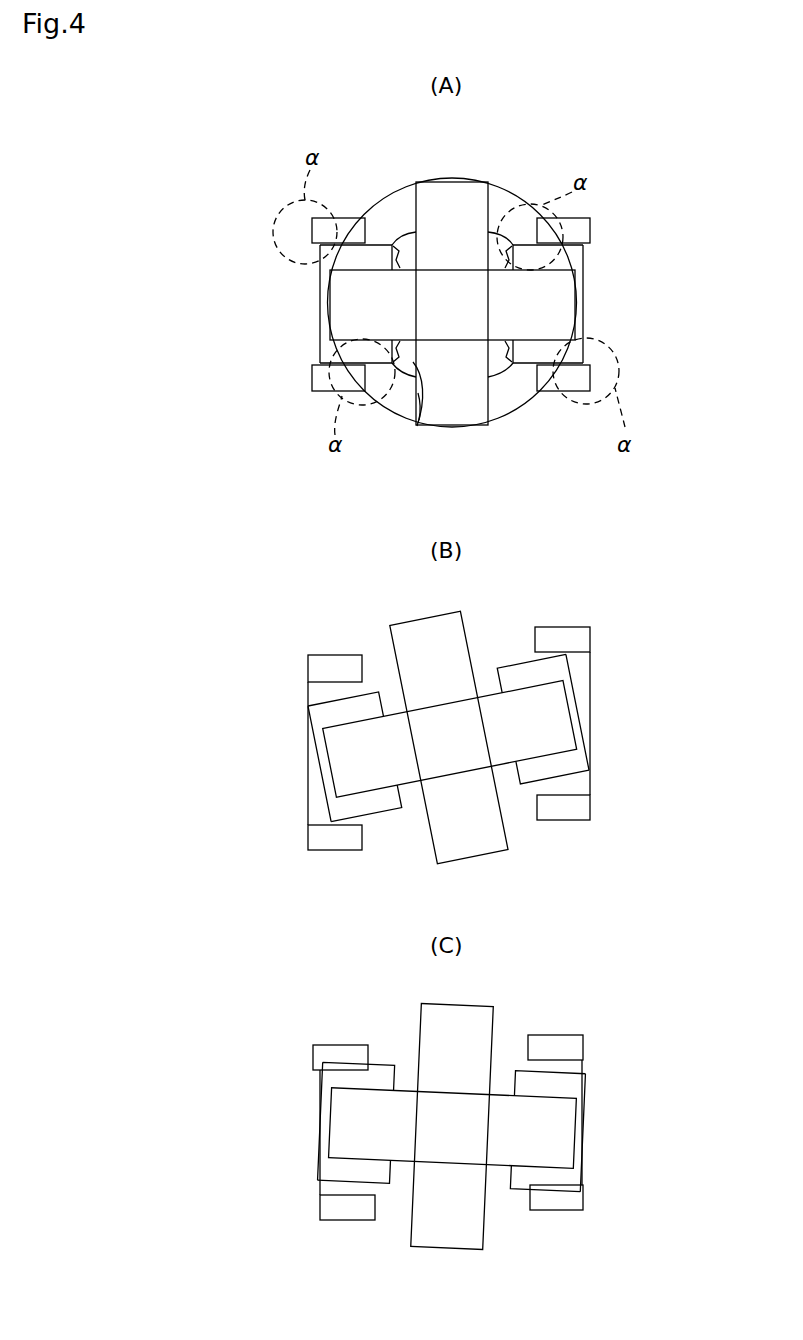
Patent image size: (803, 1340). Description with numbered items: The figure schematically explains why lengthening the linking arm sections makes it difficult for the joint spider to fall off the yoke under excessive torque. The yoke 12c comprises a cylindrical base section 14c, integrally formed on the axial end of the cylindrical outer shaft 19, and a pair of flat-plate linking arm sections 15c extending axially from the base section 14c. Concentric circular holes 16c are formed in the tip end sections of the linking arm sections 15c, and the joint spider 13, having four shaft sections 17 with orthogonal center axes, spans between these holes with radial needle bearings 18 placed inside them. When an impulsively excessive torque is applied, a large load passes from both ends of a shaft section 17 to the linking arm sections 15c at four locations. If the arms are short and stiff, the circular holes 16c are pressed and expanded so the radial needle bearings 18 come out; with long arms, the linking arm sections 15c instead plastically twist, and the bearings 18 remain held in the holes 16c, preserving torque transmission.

In FIG. 4A, the yoke 12c is at (512, 186).
In FIG. 4A, the joint spider 13 is at (431, 306).
In FIG. 4B, the joint spider 13 is at (453, 729).
In FIG. 4C, the joint spider 13 is at (452, 1132).
In FIG. 4A, the base section 14c is at (400, 400).
In FIG. 4A, the linking arm sections 15c is at (588, 231).
In FIG. 4B, the linking arm sections 15c is at (318, 665).
In FIG. 4C, the linking arm sections 15c is at (320, 1207).
In FIG. 4A, the circular holes 16c is at (322, 351).
In FIG. 4B, the circular holes 16c is at (312, 818).
In FIG. 4C, the circular holes 16c is at (320, 1075).
In FIG. 4A, the shaft sections 17 is at (460, 200).
In FIG. 4B, the shaft sections 17 is at (448, 632).
In FIG. 4C, the shaft sections 17 is at (420, 1027).
In FIG. 4A, the radial needle bearings 18 is at (586, 256).
In FIG. 4B, the radial needle bearings 18 is at (320, 713).
In FIG. 4C, the radial needle bearings 18 is at (340, 1185).
In FIG. 4A, the outer shaft 19 is at (418, 393).